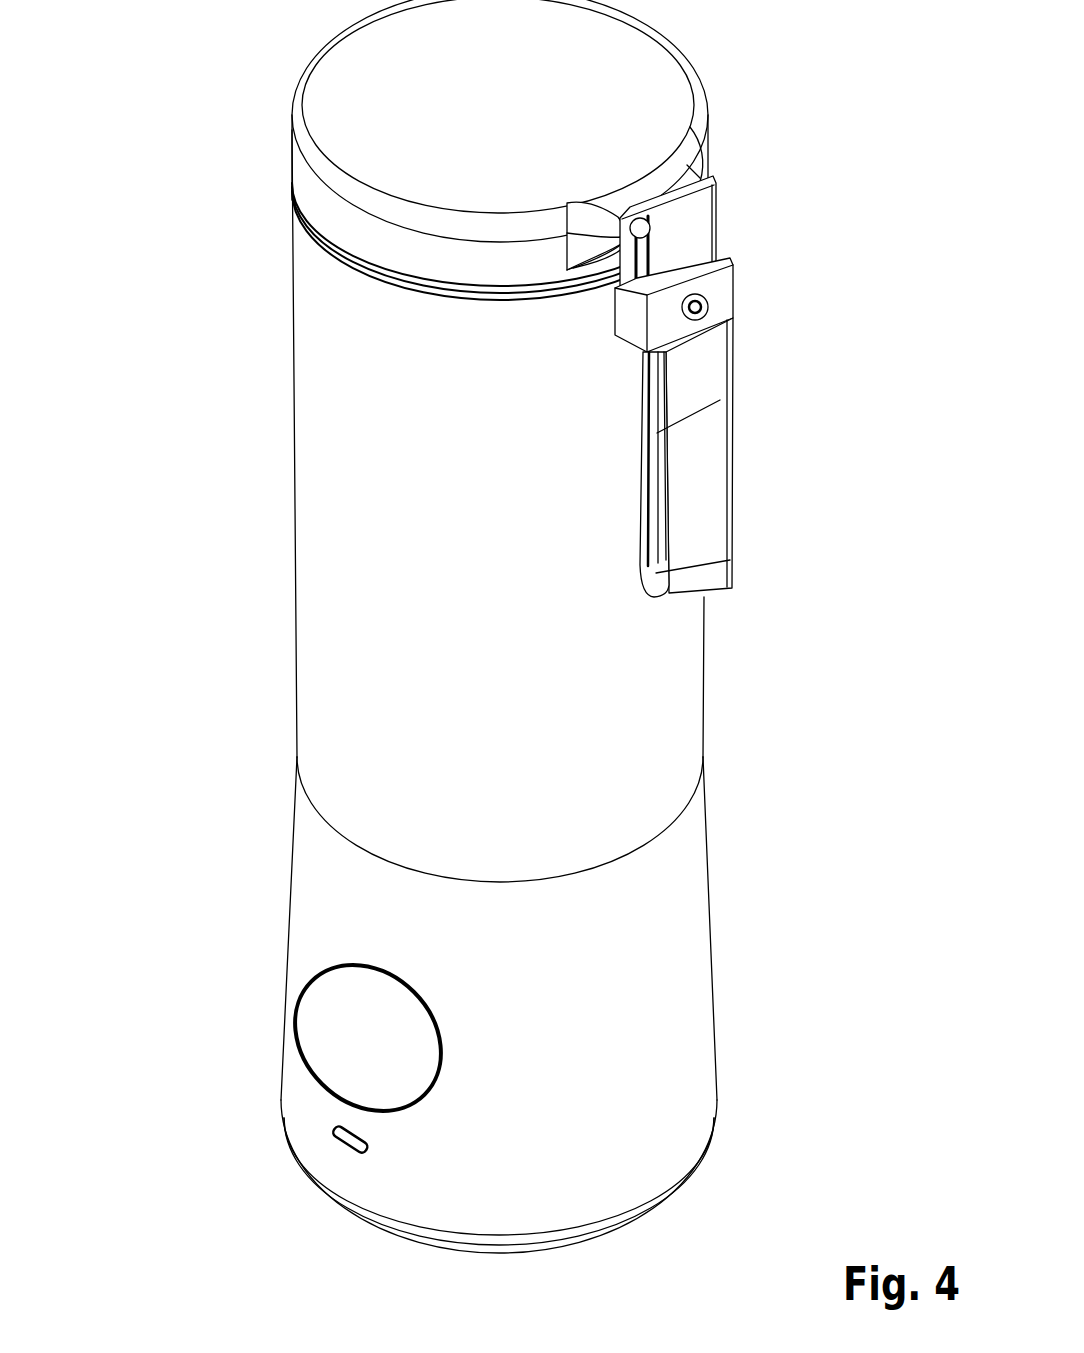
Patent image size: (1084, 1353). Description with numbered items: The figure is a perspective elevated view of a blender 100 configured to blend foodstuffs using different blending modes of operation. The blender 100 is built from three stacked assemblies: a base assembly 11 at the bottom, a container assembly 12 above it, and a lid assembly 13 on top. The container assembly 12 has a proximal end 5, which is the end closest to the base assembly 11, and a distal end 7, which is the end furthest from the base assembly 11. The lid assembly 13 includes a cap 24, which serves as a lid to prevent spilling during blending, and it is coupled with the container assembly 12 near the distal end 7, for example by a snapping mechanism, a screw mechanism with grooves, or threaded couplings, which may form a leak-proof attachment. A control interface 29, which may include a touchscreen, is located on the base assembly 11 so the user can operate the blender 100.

The blender 100 is at (462, 626).
The cap 24 is at (375, 150).
The lid assembly 13 is at (466, 298).
The distal end 7 is at (286, 248).
The container assembly 12 is at (838, 667).
The proximal end 5 is at (286, 756).
The base assembly 11 is at (446, 626).
The control interface 29 is at (268, 1037).